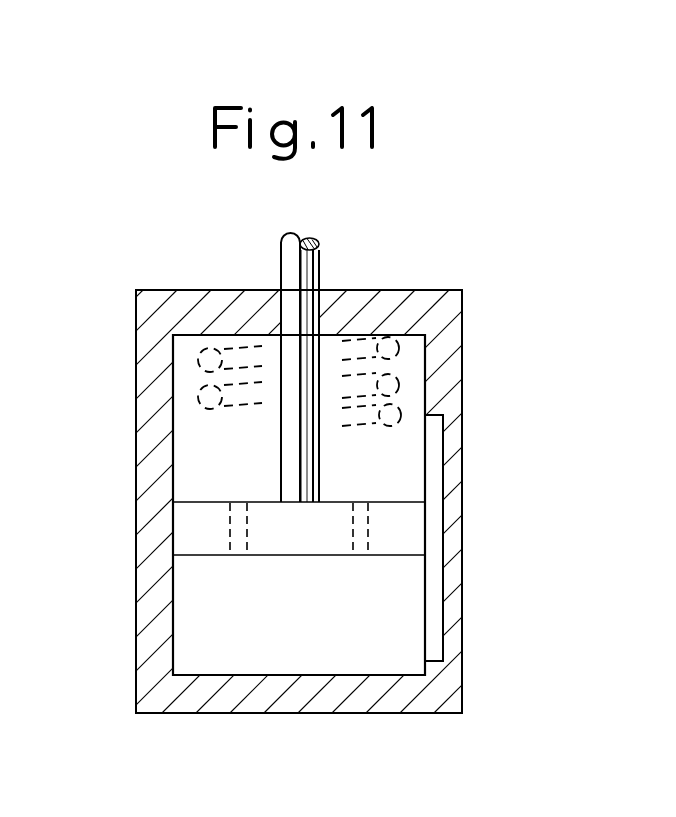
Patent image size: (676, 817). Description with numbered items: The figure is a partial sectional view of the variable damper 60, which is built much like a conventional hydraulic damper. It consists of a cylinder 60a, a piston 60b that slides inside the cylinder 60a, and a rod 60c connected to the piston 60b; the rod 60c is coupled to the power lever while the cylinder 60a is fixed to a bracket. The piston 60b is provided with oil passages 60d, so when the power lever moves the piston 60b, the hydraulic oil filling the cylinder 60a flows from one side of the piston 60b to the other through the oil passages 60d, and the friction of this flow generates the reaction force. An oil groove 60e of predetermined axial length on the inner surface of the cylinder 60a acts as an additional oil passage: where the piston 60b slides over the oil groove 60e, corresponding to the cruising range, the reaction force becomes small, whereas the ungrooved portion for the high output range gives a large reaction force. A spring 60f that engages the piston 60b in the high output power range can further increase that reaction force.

The variable damper 60 is at (510, 296).
The cylinder 60a is at (146, 602).
The piston 60b is at (297, 543).
The rod 60c is at (301, 266).
The oil passages 60d is at (232, 537).
The oil groove 60e is at (435, 474).
The spring 60f is at (400, 388).